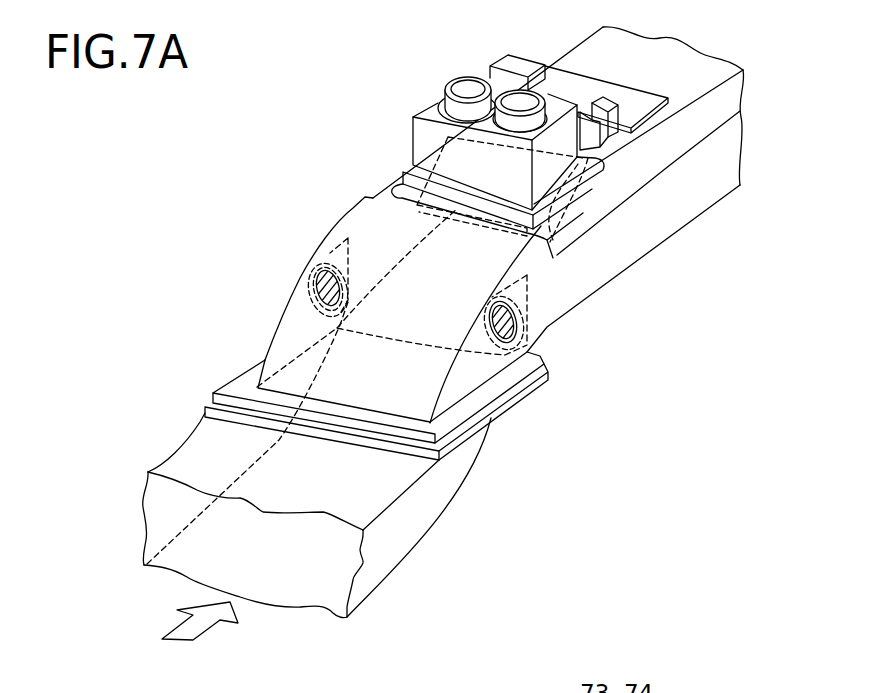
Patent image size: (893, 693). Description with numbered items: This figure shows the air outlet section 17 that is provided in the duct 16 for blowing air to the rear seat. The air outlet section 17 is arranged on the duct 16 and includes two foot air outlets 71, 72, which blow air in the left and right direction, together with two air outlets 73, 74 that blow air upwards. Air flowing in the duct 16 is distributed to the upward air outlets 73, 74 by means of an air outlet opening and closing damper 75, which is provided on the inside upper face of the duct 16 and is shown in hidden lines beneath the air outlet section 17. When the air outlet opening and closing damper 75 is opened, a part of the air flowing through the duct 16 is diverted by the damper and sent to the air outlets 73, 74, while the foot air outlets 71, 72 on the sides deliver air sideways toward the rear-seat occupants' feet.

The duct 16 is at (403, 567).
The air outlet section 17 is at (341, 108).
The foot air outlet 71 is at (313, 287).
The foot air outlet 72 is at (514, 322).
The air outlet 73 is at (455, 80).
The air outlet 74 is at (540, 94).
The air outlet opening and closing damper 75 is at (560, 213).